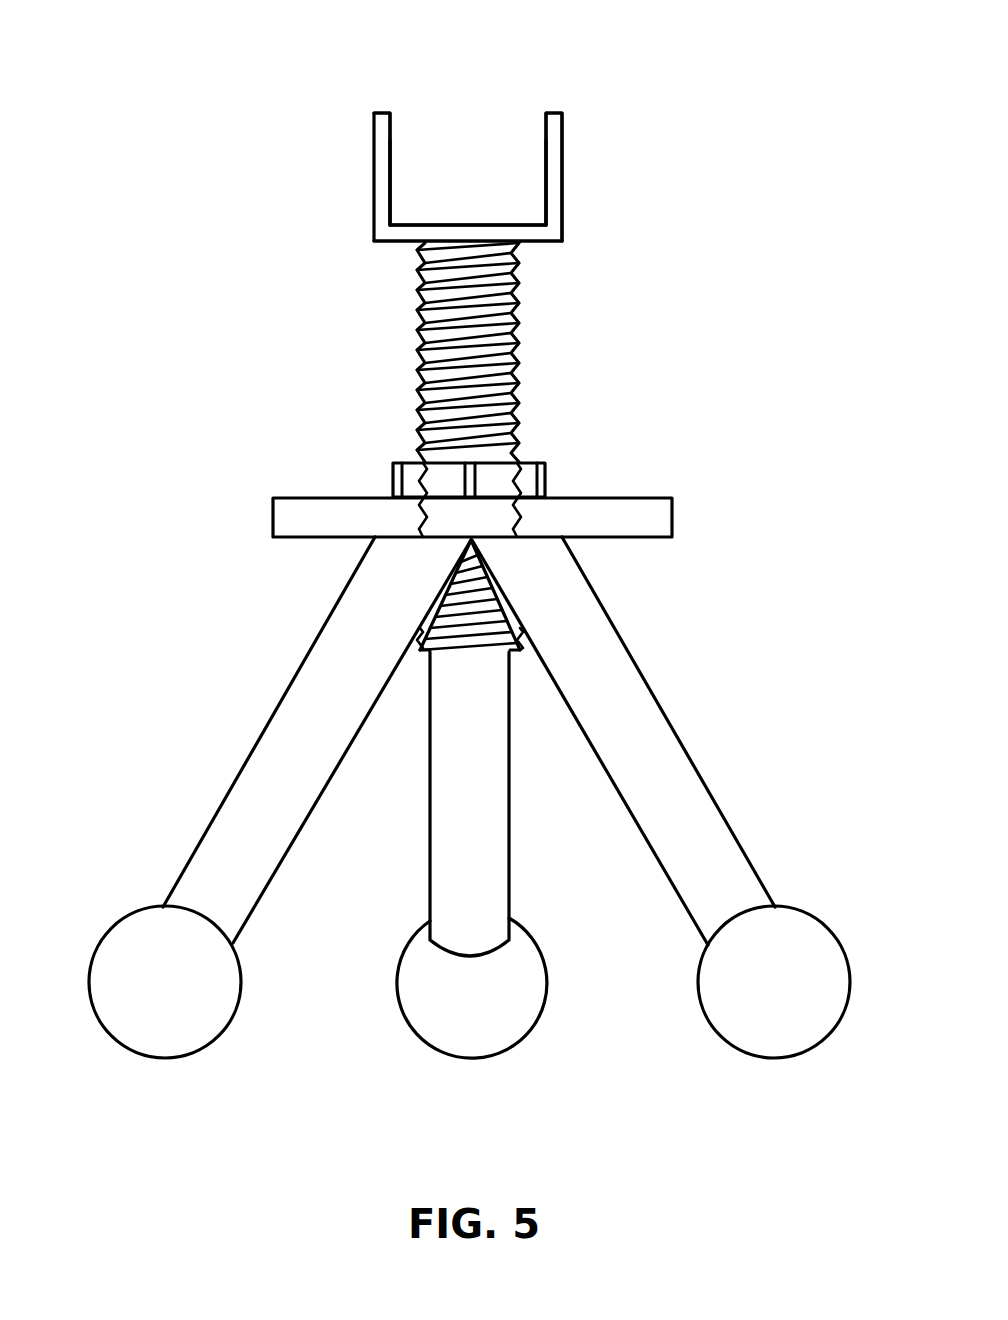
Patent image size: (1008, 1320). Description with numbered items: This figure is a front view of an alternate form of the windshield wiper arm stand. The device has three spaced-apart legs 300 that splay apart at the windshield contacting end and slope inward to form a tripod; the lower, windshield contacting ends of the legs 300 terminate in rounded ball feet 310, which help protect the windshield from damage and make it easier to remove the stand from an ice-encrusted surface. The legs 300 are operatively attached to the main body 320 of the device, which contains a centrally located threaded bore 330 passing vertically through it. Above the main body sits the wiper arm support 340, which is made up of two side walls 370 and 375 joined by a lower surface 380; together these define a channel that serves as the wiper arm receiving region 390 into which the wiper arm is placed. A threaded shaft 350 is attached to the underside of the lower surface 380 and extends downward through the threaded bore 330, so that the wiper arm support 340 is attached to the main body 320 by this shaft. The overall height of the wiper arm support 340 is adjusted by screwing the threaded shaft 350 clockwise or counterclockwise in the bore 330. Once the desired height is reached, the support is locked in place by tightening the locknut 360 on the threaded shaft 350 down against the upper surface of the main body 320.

The legs 300 is at (278, 765).
The rounded ball feet 310 is at (160, 968).
The main body 320 is at (313, 517).
The threaded bore 330 is at (520, 516).
The wiper arm support 340 is at (376, 113).
The threaded shaft 350 is at (520, 378).
The locknut 360 is at (408, 472).
The side wall 370 is at (382, 178).
The side wall 375 is at (555, 170).
The lower surface 380 is at (517, 233).
The wiper arm receiving region 390 is at (446, 222).